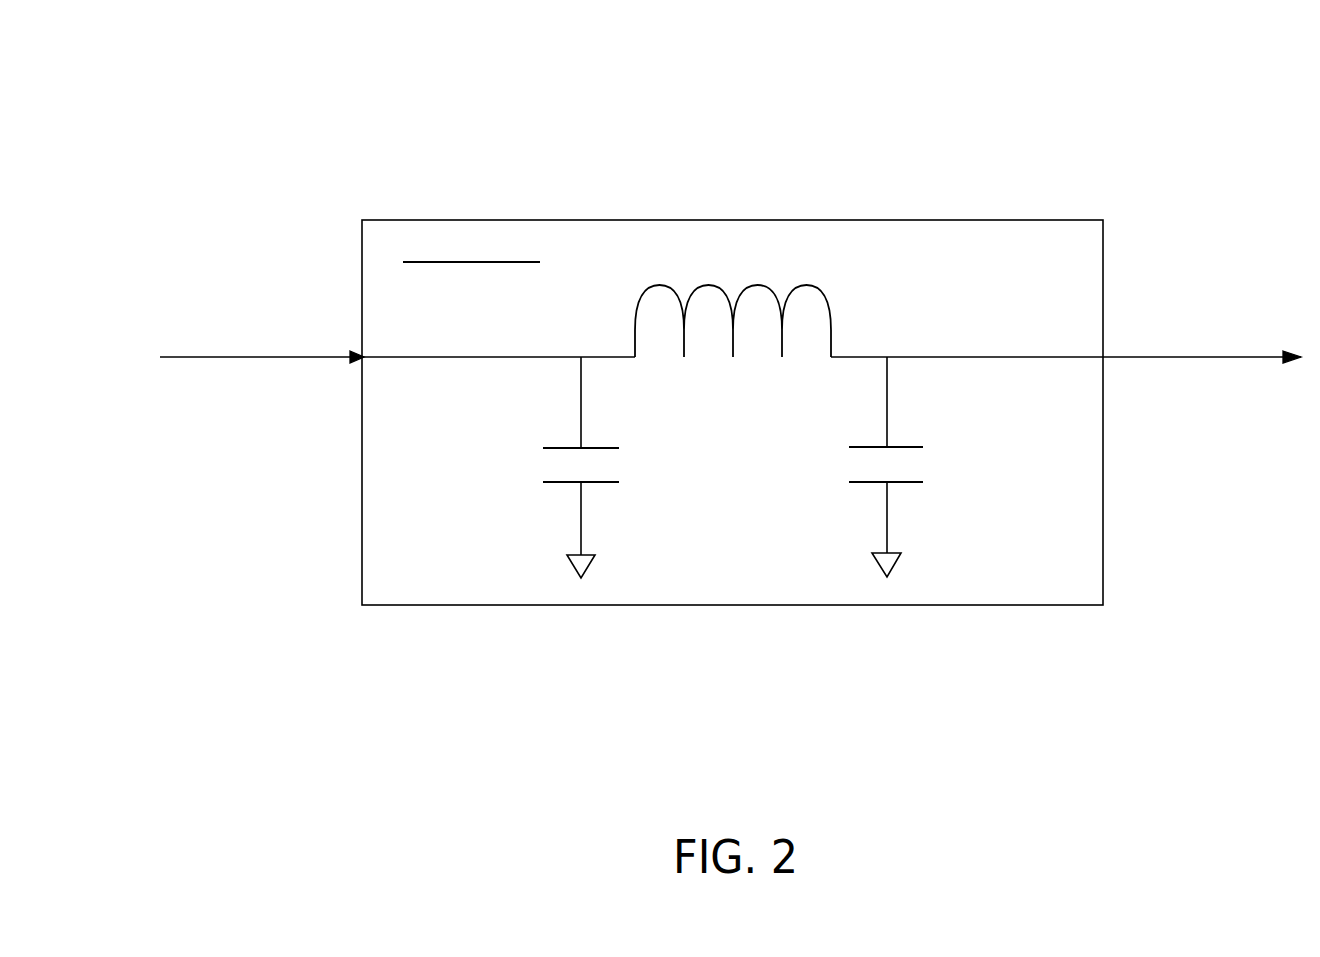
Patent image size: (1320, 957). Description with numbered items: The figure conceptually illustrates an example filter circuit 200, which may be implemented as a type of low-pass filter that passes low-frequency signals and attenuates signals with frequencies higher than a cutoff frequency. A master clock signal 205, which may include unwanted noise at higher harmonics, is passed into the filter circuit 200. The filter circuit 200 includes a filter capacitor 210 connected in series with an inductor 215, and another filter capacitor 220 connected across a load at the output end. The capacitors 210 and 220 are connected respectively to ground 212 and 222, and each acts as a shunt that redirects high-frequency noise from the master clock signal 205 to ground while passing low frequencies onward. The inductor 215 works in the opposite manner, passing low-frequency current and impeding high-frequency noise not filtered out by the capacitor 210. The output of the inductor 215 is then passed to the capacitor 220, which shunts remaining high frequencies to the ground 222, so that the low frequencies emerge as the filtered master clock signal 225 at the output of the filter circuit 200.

The filter circuit 200 is at (1125, 124).
The master clock signal 205 is at (243, 302).
The filter capacitor 210 is at (565, 483).
The ground 212 is at (575, 585).
The inductor 215 is at (665, 288).
The filter capacitor 220 is at (873, 483).
The ground 222 is at (880, 585).
The filtered master clock signal 225 is at (1192, 302).